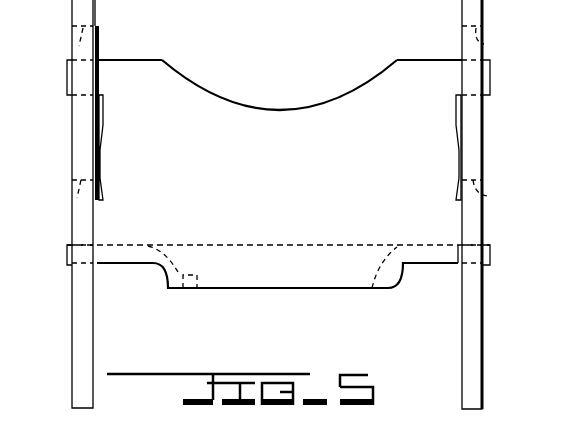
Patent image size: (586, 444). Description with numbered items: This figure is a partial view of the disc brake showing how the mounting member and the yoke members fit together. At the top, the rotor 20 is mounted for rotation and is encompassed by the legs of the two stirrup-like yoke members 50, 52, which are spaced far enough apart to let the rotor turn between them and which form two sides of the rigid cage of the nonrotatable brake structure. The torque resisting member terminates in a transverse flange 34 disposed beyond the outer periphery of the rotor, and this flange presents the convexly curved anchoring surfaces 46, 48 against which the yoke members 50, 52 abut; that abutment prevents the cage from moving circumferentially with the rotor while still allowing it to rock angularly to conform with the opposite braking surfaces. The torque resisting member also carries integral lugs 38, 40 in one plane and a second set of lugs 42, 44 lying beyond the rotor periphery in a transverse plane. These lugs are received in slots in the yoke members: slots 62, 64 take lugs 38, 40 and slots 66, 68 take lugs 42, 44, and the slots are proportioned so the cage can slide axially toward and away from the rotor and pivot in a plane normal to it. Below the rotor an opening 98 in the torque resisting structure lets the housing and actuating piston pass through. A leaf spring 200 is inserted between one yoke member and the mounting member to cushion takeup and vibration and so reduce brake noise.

The rotor 20 is at (279, 55).
The transverse flange 34 is at (414, 76).
The lug 38 is at (66, 255).
The lug 40 is at (492, 258).
The lug 42 is at (68, 85).
The lug 44 is at (487, 80).
The anchoring surface 46 is at (96, 152).
The anchoring surface 48 is at (462, 158).
The yoke member 50 is at (92, 338).
The yoke member 52 is at (462, 333).
The slot 62 is at (70, 200).
The slot 64 is at (490, 196).
The slot 66 is at (72, 46).
The slot 68 is at (487, 44).
The opening 98 is at (200, 290).
The leaf spring 200 is at (98, 43).